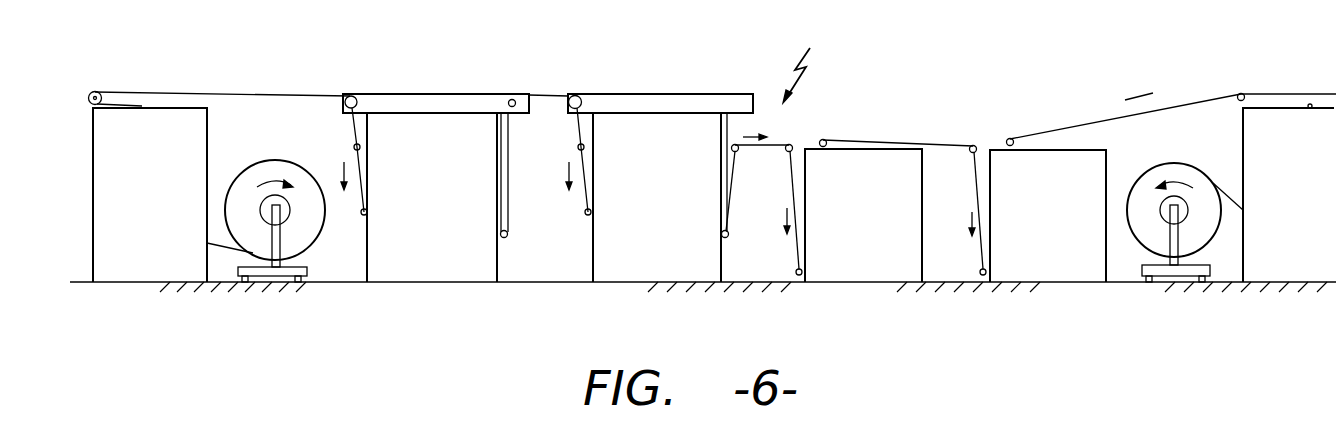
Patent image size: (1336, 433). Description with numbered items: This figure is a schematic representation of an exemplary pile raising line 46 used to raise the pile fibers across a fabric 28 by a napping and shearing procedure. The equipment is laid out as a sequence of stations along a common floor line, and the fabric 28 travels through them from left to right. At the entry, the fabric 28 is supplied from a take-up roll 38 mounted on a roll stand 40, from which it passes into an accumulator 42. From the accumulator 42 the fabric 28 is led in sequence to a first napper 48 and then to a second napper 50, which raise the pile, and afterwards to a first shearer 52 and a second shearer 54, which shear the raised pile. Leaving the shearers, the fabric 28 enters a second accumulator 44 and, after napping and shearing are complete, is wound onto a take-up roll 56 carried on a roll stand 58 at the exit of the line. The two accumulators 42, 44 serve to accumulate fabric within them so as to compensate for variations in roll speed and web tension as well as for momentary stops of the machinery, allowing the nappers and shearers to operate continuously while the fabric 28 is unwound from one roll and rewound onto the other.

The fabric 28 is at (233, 93).
The take-up roll 38 is at (267, 163).
The roll stand 40 is at (308, 270).
The accumulator 42 is at (163, 200).
The accumulator 44 is at (1314, 192).
The pile raising line 46 is at (812, 62).
The first napper 48 is at (395, 93).
The second napper 50 is at (607, 93).
The first shearer 52 is at (845, 148).
The second shearer 54 is at (1035, 147).
The take-up roll 56 is at (1187, 175).
The roll stand 58 is at (1142, 275).